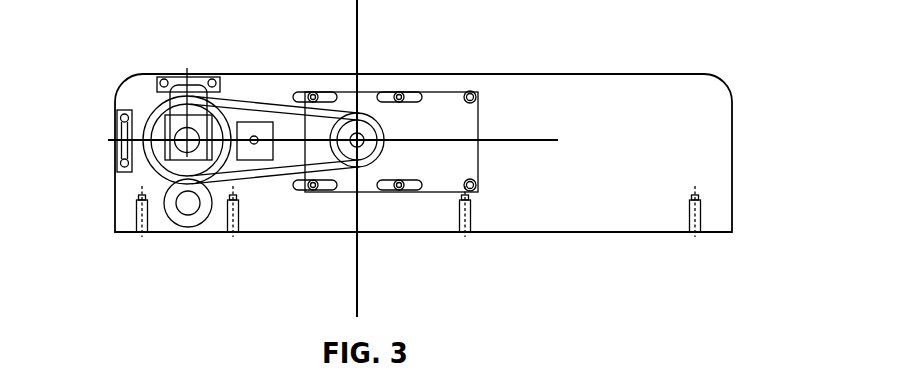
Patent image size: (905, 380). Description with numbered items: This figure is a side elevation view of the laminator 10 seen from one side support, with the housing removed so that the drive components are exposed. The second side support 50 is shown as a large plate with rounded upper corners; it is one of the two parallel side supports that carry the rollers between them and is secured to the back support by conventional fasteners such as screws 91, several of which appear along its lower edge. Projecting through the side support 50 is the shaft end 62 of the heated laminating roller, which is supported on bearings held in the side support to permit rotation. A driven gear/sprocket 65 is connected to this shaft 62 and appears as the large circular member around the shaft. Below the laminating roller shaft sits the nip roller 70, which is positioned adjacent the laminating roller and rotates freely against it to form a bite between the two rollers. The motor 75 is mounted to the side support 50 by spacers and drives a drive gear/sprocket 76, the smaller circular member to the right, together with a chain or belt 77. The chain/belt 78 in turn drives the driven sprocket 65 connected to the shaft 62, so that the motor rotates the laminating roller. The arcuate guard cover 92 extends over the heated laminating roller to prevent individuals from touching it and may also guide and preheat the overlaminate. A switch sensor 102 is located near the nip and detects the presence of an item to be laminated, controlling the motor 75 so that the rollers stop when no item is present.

The laminator 10 is at (741, 73).
The second side support 50 is at (721, 157).
The shaft end 62 is at (177, 137).
The driven gear/sprocket 65 is at (148, 170).
The nip roller 70 is at (186, 218).
The motor 75 is at (430, 112).
The drive gear/sprocket 76 is at (370, 128).
The chain or belt 77 is at (384, 165).
The chain/belt 78 is at (280, 182).
The screw 91 is at (705, 217).
The arcuate guard cover 92 is at (121, 78).
The switch sensor 102 is at (222, 184).